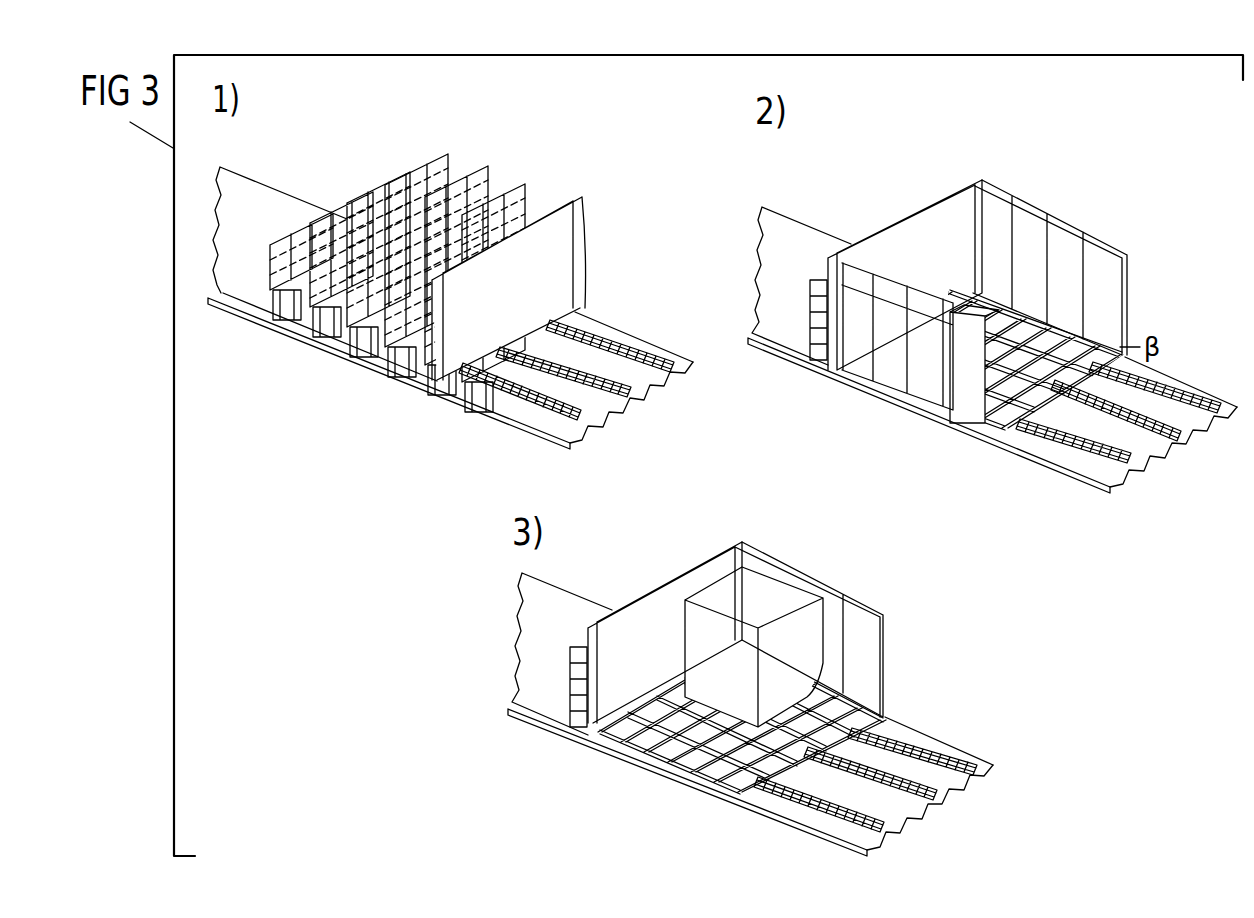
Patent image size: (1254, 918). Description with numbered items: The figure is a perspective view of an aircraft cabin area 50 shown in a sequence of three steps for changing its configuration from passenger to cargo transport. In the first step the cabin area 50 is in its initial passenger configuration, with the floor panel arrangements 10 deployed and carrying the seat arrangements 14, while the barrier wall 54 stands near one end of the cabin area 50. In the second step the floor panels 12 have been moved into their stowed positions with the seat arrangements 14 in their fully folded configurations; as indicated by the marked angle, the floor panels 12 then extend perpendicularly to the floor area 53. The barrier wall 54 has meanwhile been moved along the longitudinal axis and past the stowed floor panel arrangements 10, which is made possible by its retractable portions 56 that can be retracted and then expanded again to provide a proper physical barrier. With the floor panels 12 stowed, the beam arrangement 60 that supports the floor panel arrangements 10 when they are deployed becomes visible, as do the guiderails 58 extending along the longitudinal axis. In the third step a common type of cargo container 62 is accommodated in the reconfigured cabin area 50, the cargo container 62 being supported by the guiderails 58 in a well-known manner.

The floor panel arrangements 10 is at (370, 167).
The floor panels 12 is at (1095, 205).
The seat arrangements 14 is at (403, 148).
The aircraft cabin area 50 is at (470, 183).
The floor area 53 is at (953, 432).
The barrier wall 54 is at (462, 362).
The retractable portions 56 is at (983, 178).
The guiderails 58 is at (1057, 398).
The beam arrangement 60 is at (1002, 420).
The cargo container 62 is at (772, 587).